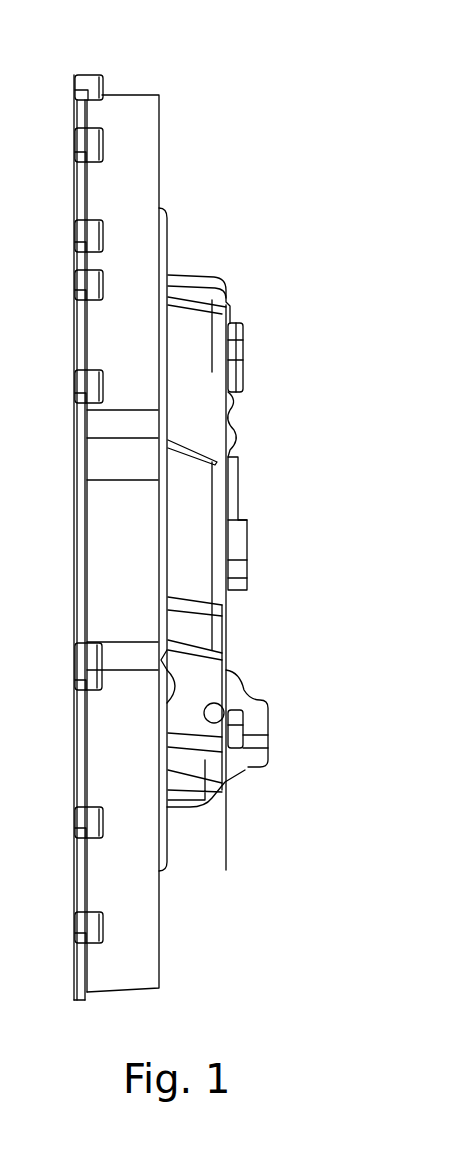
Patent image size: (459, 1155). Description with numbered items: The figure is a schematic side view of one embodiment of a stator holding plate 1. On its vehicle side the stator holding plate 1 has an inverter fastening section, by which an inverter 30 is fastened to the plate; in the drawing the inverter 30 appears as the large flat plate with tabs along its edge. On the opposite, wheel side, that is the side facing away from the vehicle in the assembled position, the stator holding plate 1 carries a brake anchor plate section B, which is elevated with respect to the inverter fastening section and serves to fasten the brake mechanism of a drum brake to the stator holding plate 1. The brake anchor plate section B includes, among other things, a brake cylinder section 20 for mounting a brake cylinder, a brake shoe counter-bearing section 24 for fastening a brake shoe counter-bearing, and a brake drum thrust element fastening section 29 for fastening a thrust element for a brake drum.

The inverter 30 is at (129, 84).
The stator holding plate 1 is at (220, 260).
The brake anchor plate section B is at (203, 539).
The brake cylinder section 20 is at (233, 343).
The brake shoe counter-bearing section 24 is at (268, 732).
The brake drum thrust element fastening section 29 is at (240, 770).